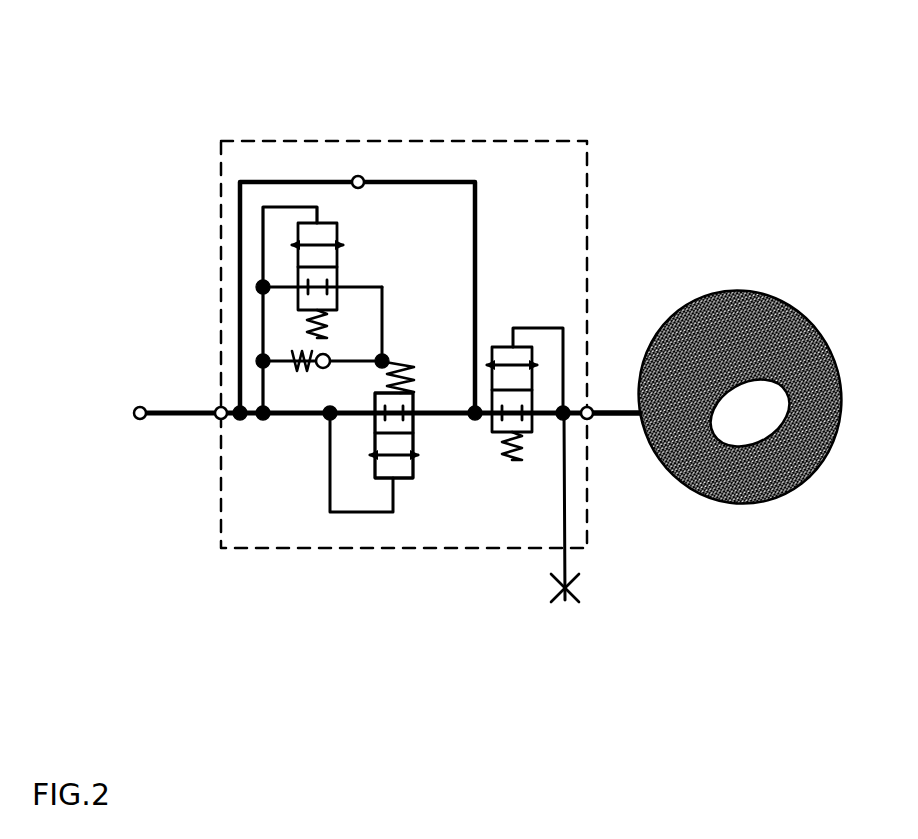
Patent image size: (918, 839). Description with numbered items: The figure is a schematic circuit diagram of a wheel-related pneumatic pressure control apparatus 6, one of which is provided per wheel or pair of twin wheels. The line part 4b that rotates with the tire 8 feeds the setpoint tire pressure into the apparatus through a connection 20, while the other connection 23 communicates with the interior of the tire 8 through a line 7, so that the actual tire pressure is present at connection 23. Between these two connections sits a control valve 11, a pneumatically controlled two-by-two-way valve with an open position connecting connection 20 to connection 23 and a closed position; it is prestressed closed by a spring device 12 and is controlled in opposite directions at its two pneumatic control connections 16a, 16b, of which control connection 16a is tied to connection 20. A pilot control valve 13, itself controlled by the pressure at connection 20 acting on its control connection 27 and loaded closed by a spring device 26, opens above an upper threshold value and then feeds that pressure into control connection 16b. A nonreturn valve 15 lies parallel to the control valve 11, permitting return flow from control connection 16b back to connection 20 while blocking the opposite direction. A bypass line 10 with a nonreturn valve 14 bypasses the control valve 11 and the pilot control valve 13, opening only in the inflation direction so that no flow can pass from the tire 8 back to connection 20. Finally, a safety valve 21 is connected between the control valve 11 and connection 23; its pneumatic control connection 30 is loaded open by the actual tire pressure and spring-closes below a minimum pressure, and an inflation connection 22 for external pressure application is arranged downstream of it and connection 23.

The line part 4b is at (162, 418).
The pressure control apparatus 6 is at (581, 113).
The line 7 is at (615, 407).
The tire 8 is at (763, 290).
The bypass line 10 is at (280, 180).
The control valve 11 is at (405, 478).
The spring device 12 is at (400, 362).
The pilot control valve 13 is at (298, 237).
The nonreturn valve 14 is at (353, 177).
The nonreturn valve 15 is at (298, 352).
The pneumatic control connection 16a is at (397, 478).
The pneumatic control connection 16b is at (380, 386).
The connection 20 is at (218, 421).
The safety valve 21 is at (532, 365).
The inflation connection 22 is at (567, 550).
The connection 23 is at (591, 420).
The spring device 26 is at (312, 325).
The control connection 27 is at (320, 223).
The pneumatic control connection 30 is at (512, 347).